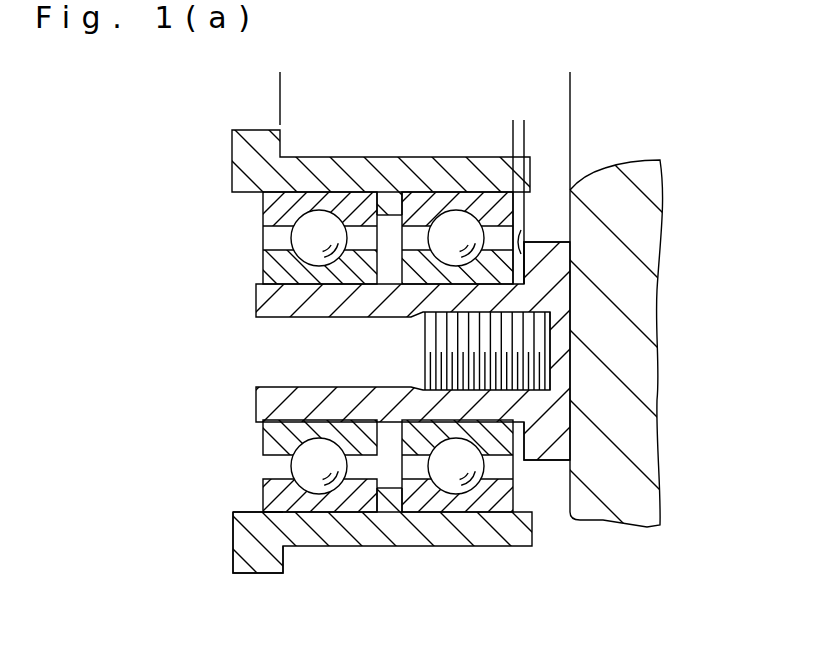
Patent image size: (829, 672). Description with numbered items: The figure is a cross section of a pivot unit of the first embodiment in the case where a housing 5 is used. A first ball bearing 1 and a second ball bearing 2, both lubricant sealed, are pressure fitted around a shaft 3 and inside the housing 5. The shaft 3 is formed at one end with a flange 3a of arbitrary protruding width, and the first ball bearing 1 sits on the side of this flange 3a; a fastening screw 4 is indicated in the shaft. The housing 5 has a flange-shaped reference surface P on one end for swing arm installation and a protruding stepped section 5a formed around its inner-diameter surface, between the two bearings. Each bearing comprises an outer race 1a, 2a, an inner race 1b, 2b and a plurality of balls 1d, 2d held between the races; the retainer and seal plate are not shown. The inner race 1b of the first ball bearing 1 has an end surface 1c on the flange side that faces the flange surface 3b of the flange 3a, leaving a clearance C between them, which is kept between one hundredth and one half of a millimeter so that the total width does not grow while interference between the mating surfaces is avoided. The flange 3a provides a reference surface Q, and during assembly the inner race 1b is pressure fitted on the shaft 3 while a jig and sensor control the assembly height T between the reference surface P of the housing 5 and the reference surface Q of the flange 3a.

The first ball bearing 1 is at (443, 516).
The outer race 1a is at (405, 515).
The inner race 1b is at (460, 450).
The end surface 1c is at (512, 283).
The balls 1d is at (488, 432).
The second ball bearing 2 is at (281, 464).
The outer race 2a is at (234, 513).
The inner race 2b is at (263, 435).
The balls 2d is at (300, 466).
The shaft 3 is at (258, 297).
The flange 3a is at (540, 246).
The flange surface 3b is at (523, 226).
The fastening screw 4 is at (493, 312).
The housing 5 is at (327, 172).
The protruding stepped section 5a is at (385, 198).
The reference surface P is at (283, 553).
The reference surface Q is at (571, 440).
The assembly height T is at (568, 82).
The clearance C is at (548, 127).